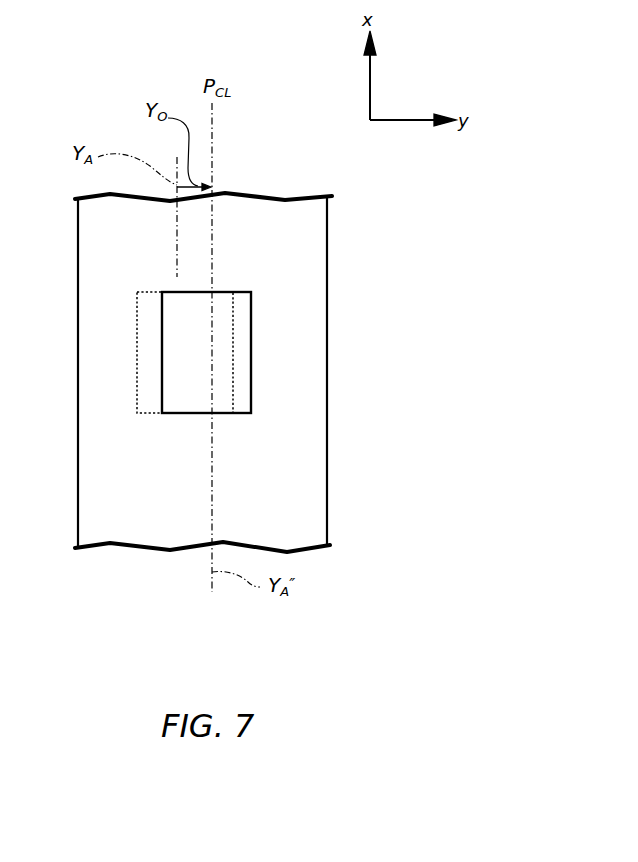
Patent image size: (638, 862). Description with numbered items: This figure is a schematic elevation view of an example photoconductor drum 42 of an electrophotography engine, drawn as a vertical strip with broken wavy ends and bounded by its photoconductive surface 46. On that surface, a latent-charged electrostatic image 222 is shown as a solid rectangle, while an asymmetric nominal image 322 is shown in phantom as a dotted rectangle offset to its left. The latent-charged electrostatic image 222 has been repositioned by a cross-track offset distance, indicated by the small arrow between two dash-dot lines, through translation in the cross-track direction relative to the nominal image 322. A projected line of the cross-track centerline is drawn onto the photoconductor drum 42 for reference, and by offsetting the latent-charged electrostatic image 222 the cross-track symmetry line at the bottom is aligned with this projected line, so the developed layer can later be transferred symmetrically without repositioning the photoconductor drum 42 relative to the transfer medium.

The photoconductor drum 42 is at (313, 457).
The photoconductive surface 46 is at (276, 248).
The latent-charged electrostatic image 222 is at (252, 321).
The nominal image 322 is at (137, 333).